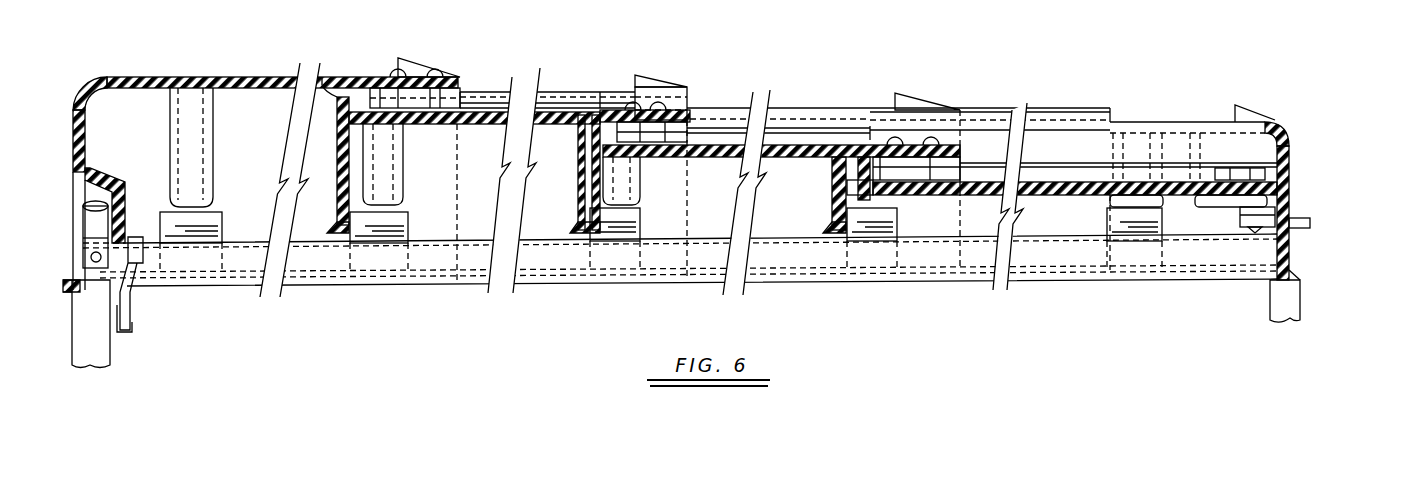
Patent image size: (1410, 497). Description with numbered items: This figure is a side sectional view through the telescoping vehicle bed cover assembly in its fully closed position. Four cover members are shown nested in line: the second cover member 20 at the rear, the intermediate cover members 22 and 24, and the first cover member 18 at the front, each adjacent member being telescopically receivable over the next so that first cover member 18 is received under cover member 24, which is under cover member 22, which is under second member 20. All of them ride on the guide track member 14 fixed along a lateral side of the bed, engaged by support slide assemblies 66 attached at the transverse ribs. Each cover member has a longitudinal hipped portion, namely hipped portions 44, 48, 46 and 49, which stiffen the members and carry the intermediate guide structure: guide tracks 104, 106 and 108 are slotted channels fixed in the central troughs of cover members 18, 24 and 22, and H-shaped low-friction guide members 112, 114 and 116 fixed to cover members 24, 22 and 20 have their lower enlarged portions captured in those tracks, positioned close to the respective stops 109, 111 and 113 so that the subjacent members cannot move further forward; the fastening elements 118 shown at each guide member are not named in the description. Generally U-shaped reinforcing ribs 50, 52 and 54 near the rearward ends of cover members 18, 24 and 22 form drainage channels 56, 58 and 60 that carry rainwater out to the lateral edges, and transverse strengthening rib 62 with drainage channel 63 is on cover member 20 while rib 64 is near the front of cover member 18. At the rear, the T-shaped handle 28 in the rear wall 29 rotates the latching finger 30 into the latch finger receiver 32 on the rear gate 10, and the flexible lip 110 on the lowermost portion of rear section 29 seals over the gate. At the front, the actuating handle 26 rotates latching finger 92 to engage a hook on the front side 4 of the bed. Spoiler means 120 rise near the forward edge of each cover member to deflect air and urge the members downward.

The front side 4 is at (1282, 297).
The rear gate 10 is at (100, 353).
The guide track member 14 is at (237, 280).
The first cover member 18 is at (1113, 118).
The second cover member 20 is at (160, 74).
The intermediate cover member 22 is at (603, 78).
The intermediate cover member 24 is at (838, 102).
The actuating handle 26 is at (1226, 165).
The T-shaped handle 28 is at (93, 200).
The rear wall 29 is at (73, 127).
The latching finger 30 is at (137, 290).
The latch finger receiver 32 is at (132, 328).
The hipped portion 44 is at (230, 77).
The hipped portion 46 is at (847, 108).
The hipped portion 48 is at (607, 87).
The hipped portion 49 is at (1143, 122).
The reinforcing rib 50 is at (837, 203).
The reinforcing rib 52 is at (613, 198).
The reinforcing rib 54 is at (402, 152).
The drainage channel 56 is at (892, 200).
The drainage channel 58 is at (623, 173).
The drainage channel 60 is at (383, 173).
The transverse strengthening rib 62 is at (210, 157).
The drainage channel 63 is at (190, 143).
The transverse strengthening rib 64 is at (1165, 202).
The support slide assembly 66 is at (223, 212).
The latching finger 92 is at (1300, 220).
The intermediate guide track 104 is at (1080, 163).
The intermediate guide track 106 is at (805, 128).
The intermediate guide track 108 is at (507, 92).
The stop 109 is at (843, 177).
The flexible lip 110 is at (63, 293).
The stop 111 is at (577, 137).
The intermediate guide member 112 is at (952, 157).
The stop 113 is at (312, 72).
The intermediate guide member 114 is at (690, 112).
The intermediate guide member 116 is at (467, 90).
The clip 118 is at (395, 78).
The spoiler means 120 is at (417, 53).